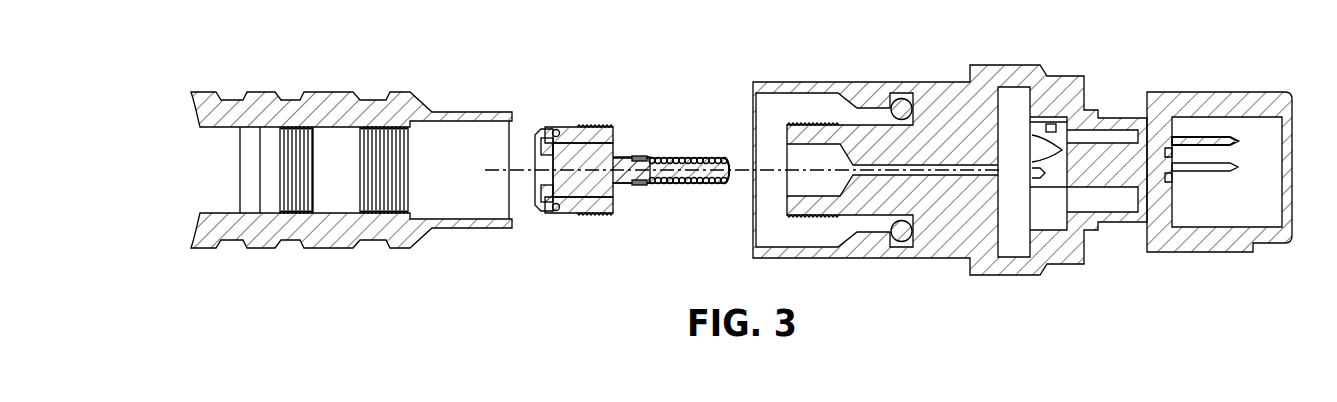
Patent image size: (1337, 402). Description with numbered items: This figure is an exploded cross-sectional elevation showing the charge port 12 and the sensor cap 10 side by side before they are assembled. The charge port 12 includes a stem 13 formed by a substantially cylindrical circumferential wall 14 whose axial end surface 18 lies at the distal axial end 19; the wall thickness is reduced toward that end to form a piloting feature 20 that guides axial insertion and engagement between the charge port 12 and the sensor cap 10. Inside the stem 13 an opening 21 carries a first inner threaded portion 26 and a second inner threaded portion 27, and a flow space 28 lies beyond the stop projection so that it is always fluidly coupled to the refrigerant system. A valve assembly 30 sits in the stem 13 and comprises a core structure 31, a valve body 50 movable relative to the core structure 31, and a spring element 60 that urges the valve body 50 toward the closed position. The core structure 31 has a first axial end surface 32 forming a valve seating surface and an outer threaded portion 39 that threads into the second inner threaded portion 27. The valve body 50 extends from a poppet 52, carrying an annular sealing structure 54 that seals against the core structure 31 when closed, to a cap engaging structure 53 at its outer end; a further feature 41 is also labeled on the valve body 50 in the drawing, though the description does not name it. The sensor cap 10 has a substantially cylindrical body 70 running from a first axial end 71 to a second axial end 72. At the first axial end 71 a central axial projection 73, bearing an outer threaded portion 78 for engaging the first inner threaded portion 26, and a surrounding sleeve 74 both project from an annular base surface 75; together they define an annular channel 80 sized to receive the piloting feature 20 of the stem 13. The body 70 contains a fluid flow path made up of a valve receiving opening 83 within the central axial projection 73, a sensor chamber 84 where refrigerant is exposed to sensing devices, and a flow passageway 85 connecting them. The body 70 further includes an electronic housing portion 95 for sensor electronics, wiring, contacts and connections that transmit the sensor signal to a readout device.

The sensor cap 10 is at (1013, 180).
The charge port 12 is at (371, 171).
The stem 13 is at (257, 102).
The circumferential wall 14 is at (210, 101).
The axial end surface 18 is at (513, 113).
The distal axial end 19 is at (502, 136).
The piloting feature 20 is at (485, 112).
The opening 21 is at (438, 123).
The first inner threaded portion 26 is at (382, 102).
The second inner threaded portion 27 is at (298, 102).
The flow space 28 is at (224, 186).
The valve assembly 30 is at (595, 147).
The core structure 31 is at (572, 208).
The first axial end surface 32 is at (537, 196).
The outer threaded portion 39 is at (596, 216).
The contact band 41 is at (640, 156).
The valve body 50 is at (619, 172).
The poppet 52 is at (540, 155).
The cap engaging structure 53 is at (728, 160).
The annular sealing structure 54 is at (547, 131).
The spring element 60 is at (673, 187).
The body 70 is at (987, 80).
The first axial end 71 is at (752, 95).
The second axial end 72 is at (1293, 95).
The central axial projection 73 is at (783, 196).
The sleeve 74 is at (790, 260).
The base surface 75 is at (938, 122).
The outer threaded portion 78 is at (807, 155).
The annular channel 80 is at (858, 226).
The valve receiving opening 83 is at (788, 118).
The sensor chamber 84 is at (1012, 137).
The flow passageway 85 is at (948, 170).
The electronic housing portion 95 is at (1187, 88).